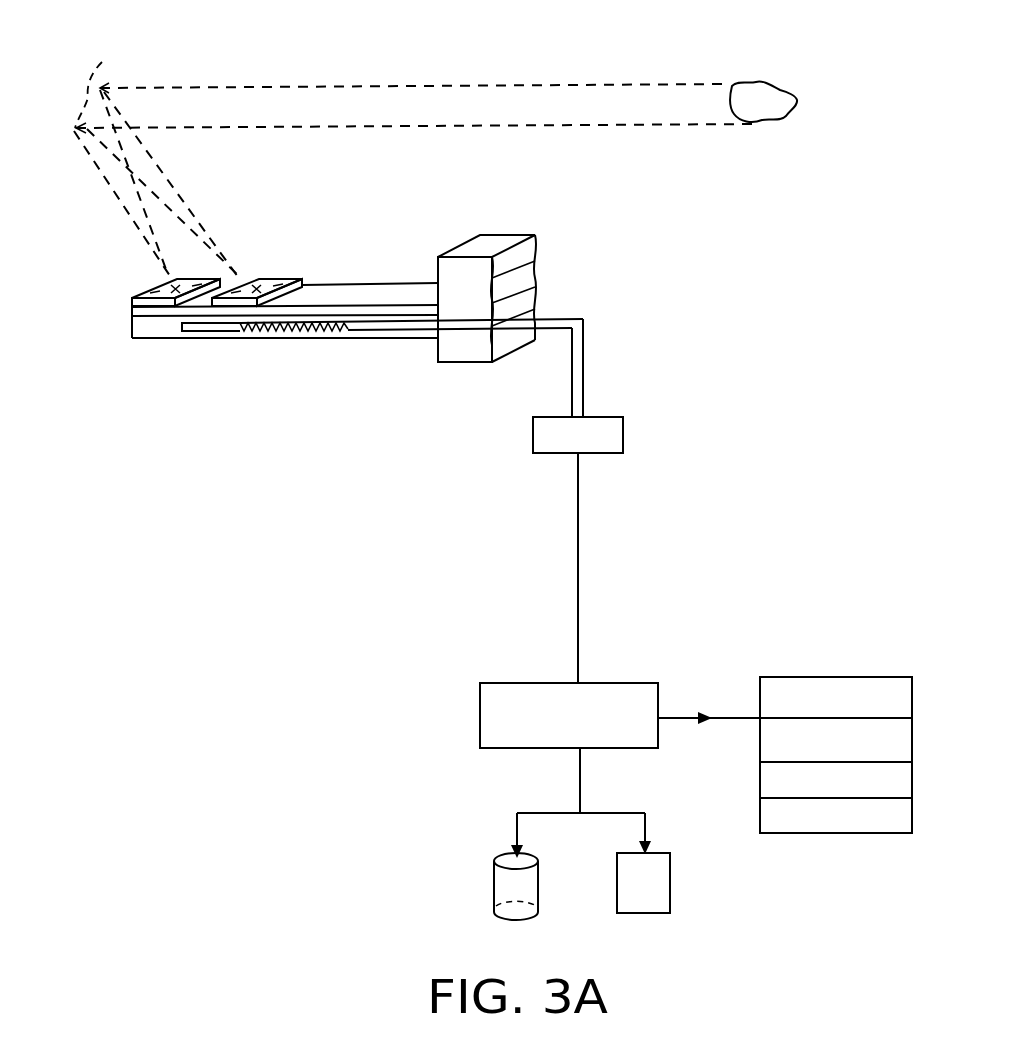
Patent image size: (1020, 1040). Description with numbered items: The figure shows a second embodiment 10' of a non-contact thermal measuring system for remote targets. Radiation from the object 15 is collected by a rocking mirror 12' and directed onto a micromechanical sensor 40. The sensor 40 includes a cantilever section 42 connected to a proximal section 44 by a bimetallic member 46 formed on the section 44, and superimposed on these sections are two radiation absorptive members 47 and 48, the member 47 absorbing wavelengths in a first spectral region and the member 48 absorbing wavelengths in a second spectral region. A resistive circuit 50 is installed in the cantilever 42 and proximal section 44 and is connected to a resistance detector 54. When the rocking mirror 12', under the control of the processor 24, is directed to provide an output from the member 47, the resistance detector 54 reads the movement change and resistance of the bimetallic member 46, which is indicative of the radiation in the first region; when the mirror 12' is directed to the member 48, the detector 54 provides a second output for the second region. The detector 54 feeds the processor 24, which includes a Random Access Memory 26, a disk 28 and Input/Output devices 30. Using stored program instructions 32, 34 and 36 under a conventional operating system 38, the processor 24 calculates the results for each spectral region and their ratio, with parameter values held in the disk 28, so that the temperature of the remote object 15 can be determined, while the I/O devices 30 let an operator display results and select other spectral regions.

The second embodiment system 10' is at (397, 89).
The rocking mirror 12' is at (107, 69).
The object 15 is at (797, 102).
The processor 24 is at (657, 683).
The Random Access Memory (RAM) 26 is at (872, 666).
The disk 28 is at (494, 877).
The Input/Output (I/O) devices 30 is at (617, 876).
The stored program 32 is at (760, 690).
The stored program instruction 34 is at (760, 738).
The stored program 36 is at (760, 784).
The operating system 38 is at (760, 820).
The micromechanical sensor 40 is at (568, 252).
The cantilever section 42 is at (367, 283).
The proximal section 44 is at (438, 362).
The bimetallic member 46 is at (135, 310).
The radiation absorptive member 47 is at (143, 296).
The radiation absorptive member 48 is at (277, 279).
The resistive circuit 50 is at (213, 332).
The resistance detector 54 is at (623, 418).